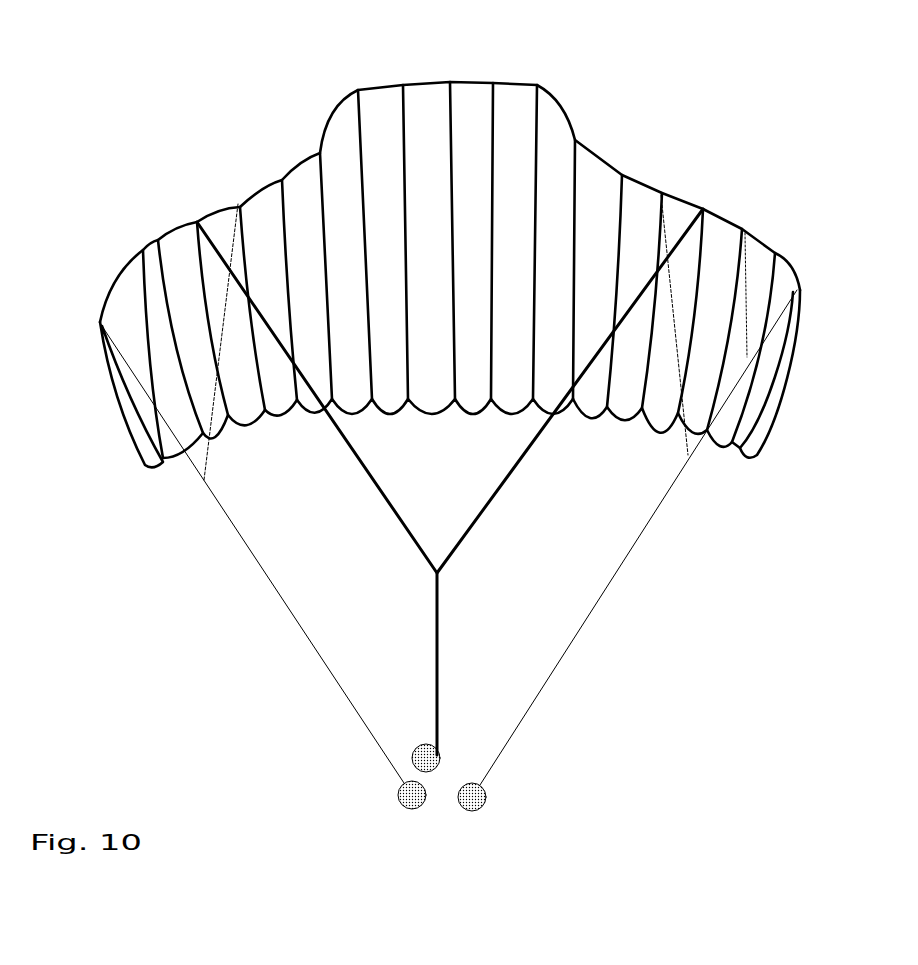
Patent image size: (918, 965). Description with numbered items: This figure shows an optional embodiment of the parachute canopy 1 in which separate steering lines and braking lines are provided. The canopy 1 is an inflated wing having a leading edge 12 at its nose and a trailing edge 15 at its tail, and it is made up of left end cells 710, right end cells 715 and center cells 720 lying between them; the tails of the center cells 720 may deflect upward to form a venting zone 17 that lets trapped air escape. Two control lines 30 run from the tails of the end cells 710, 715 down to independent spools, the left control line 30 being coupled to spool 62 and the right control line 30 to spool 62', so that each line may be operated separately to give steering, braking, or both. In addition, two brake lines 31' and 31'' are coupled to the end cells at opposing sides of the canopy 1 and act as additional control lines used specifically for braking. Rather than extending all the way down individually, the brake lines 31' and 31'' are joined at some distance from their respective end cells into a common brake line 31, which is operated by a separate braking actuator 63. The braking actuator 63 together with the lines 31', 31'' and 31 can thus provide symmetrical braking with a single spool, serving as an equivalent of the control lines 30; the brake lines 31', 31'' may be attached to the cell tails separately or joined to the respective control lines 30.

The canopy 1 is at (210, 112).
The trailing edge 15 is at (623, 157).
The venting zone 17 is at (472, 80).
The left end cells 710 is at (118, 296).
The right end cells 715 is at (777, 253).
The leading edge 12 is at (280, 425).
The center cells 720 is at (533, 407).
The control lines 30 is at (190, 463).
The common brake line 31 is at (450, 502).
The brake line 31' is at (638, 537).
The brake line 31'' is at (252, 553).
The spool 62 is at (364, 830).
The spool 62' is at (531, 831).
The braking actuator 63 is at (411, 753).